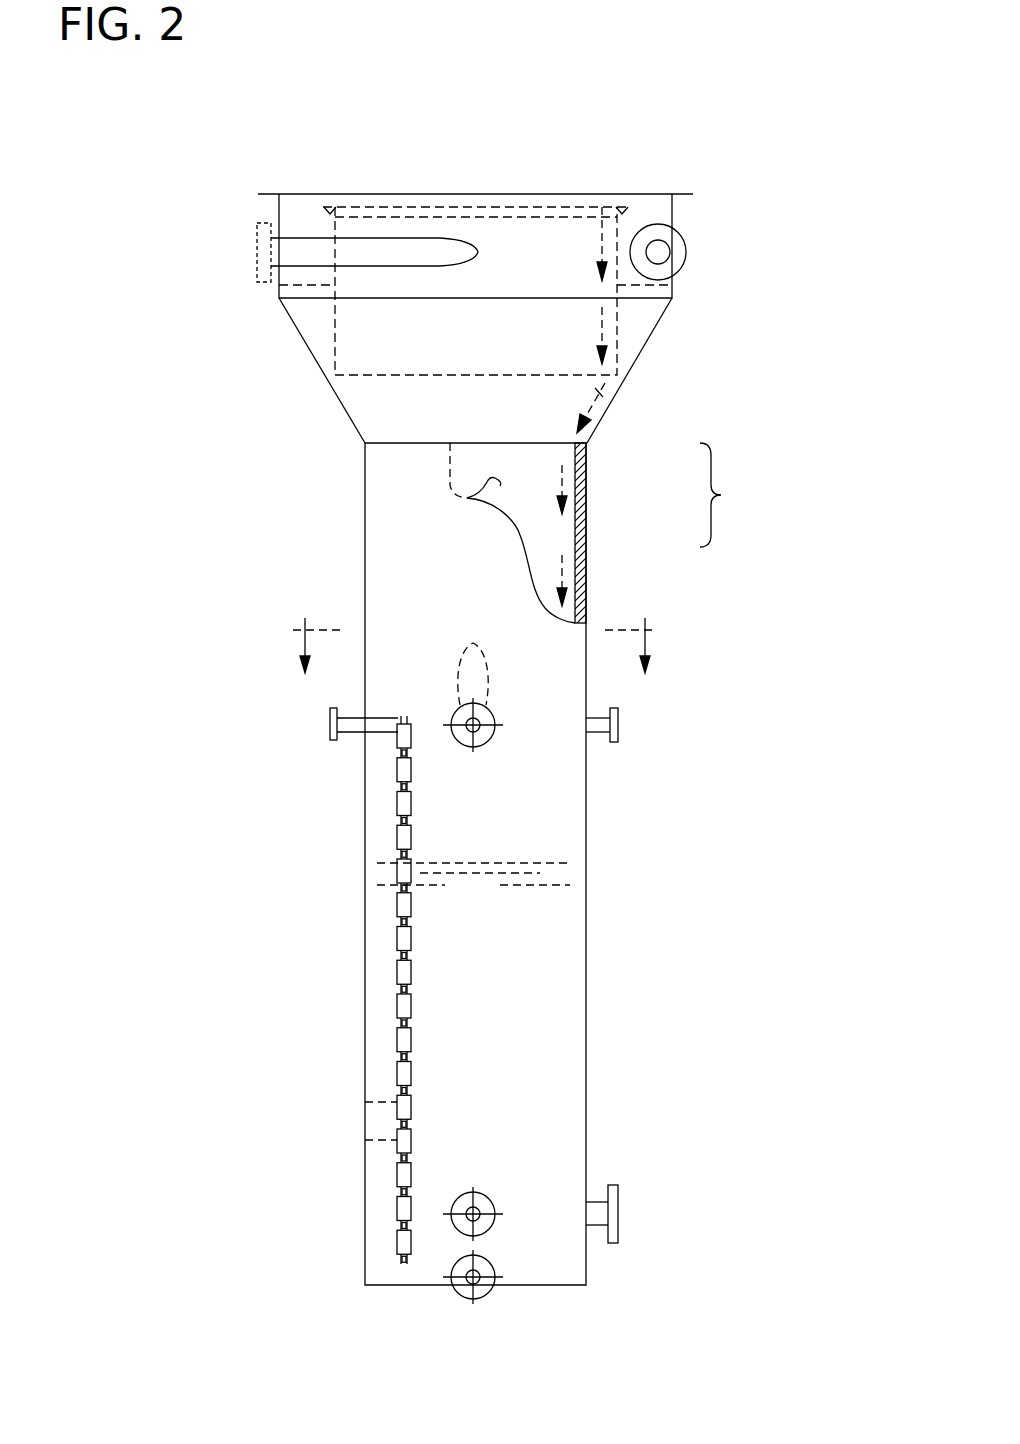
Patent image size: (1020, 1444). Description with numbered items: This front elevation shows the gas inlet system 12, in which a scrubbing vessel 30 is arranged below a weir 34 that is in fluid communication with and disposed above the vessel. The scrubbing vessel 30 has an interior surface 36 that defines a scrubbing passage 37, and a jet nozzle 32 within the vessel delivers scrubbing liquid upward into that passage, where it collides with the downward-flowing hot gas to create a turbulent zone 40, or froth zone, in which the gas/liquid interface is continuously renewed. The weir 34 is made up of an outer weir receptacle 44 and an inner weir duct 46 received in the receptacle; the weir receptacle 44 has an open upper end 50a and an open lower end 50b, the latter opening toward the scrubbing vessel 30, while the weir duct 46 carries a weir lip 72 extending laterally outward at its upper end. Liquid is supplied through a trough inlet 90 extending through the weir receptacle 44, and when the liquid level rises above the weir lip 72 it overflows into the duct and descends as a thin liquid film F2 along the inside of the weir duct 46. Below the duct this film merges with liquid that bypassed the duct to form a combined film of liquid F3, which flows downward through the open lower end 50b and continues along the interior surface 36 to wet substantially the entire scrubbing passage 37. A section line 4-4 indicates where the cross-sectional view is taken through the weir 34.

The gas inlet system 12 is at (805, 128).
The scrubbing vessel 30 is at (608, 858).
The jet nozzle 32 is at (489, 685).
The weir 34 is at (200, 326).
The interior surface 36 is at (575, 532).
The scrubbing passage 37 is at (462, 498).
The turbulent zone 40 is at (737, 495).
The weir receptacle 44 is at (312, 385).
The weir duct 46 is at (635, 329).
The open upper end 50a is at (480, 194).
The open lower end 50b is at (386, 450).
The weir lip 72 is at (330, 205).
The trough inlet 90 is at (300, 253).
The liquid film F2 is at (594, 245).
The combined film of liquid F3 is at (607, 407).
The section line 4- 4 is at (477, 632).